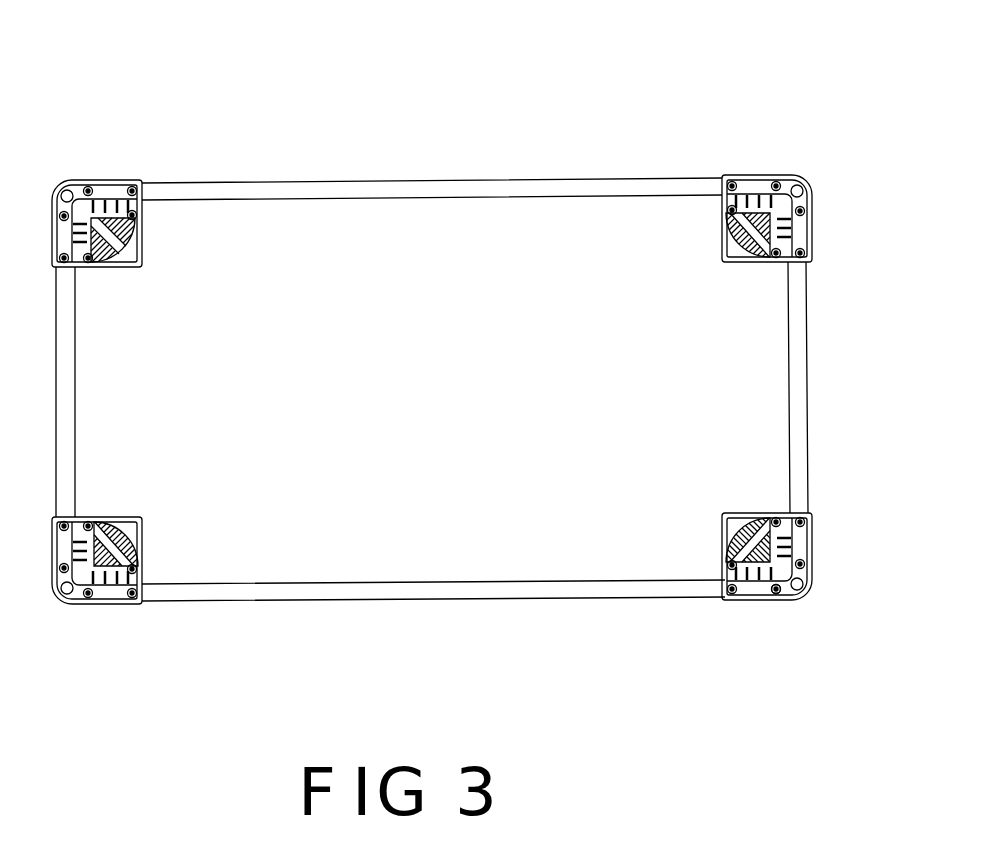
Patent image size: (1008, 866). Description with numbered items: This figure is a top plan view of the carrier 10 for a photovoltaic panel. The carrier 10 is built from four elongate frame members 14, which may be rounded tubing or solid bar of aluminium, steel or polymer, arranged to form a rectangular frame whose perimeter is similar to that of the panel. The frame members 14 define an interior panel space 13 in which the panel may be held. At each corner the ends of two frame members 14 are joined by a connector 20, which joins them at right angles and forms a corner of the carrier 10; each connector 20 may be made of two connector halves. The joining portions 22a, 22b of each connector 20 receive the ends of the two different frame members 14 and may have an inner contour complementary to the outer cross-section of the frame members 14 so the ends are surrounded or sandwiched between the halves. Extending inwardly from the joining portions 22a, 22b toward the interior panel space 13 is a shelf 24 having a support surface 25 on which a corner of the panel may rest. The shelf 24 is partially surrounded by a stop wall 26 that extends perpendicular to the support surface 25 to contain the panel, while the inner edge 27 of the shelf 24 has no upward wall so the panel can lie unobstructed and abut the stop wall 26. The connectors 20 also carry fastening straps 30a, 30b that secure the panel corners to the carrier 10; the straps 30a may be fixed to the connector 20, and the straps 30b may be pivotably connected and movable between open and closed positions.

The carrier 10 is at (533, 114).
The interior panel space 13 is at (475, 395).
The frame members 14 is at (365, 190).
The connectors 20 is at (67, 183).
The joining portion 22a is at (747, 180).
The joining portion 22b is at (810, 240).
The shelf 24 is at (733, 245).
The support surface 25 is at (727, 230).
The stop wall 26 is at (727, 540).
The inner edge 27 is at (745, 517).
The fastening straps 30a is at (115, 267).
The fastening straps 30b is at (765, 260).